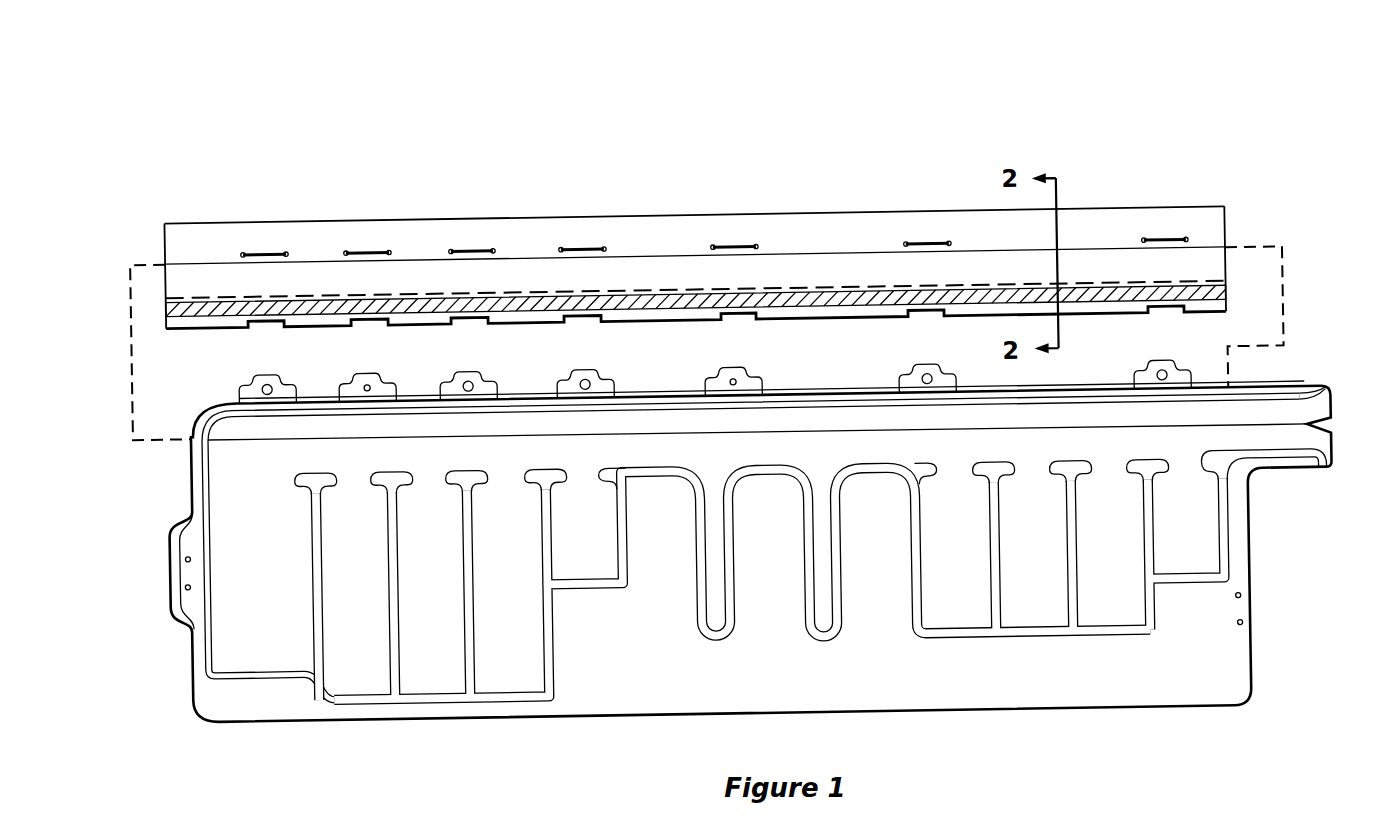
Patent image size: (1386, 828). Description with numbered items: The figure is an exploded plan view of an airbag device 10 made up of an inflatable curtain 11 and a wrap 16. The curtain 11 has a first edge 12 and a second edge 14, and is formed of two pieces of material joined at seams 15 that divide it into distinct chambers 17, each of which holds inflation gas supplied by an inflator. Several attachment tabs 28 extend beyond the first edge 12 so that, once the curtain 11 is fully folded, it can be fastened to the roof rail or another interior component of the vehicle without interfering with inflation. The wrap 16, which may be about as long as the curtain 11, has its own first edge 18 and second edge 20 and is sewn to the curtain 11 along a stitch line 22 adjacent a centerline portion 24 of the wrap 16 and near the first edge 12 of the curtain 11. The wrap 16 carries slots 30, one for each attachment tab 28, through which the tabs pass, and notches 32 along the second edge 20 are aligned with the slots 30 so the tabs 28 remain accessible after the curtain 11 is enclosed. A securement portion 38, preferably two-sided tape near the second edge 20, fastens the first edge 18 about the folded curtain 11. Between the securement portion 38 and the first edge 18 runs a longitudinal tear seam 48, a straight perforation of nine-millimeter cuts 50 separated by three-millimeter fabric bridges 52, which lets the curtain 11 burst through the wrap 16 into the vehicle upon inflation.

The airbag device 10 is at (1275, 742).
The inflatable curtain 11 is at (1249, 616).
The first edge of the curtain 12 is at (662, 397).
The second edge of the curtain 14 is at (846, 723).
The seams 15 is at (762, 476).
The wrap 16 is at (1209, 233).
The chamber 17 is at (246, 587).
The first edge of the wrap 18 is at (738, 223).
The second edge of the wrap 20 is at (821, 329).
The stitch line 22 is at (1287, 280).
The centerline portion of the wrap 24 is at (1097, 263).
The attachment tabs 28 is at (452, 383).
The slots 30 is at (737, 253).
The notches 32 is at (364, 329).
The securement portion 38 is at (1228, 314).
The tear seam 48 is at (1204, 297).
The cuts 50 is at (820, 298).
The fabric bridges 52 is at (804, 298).